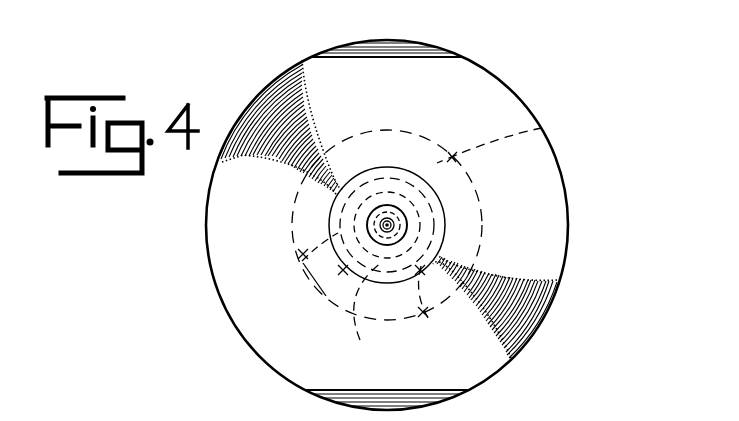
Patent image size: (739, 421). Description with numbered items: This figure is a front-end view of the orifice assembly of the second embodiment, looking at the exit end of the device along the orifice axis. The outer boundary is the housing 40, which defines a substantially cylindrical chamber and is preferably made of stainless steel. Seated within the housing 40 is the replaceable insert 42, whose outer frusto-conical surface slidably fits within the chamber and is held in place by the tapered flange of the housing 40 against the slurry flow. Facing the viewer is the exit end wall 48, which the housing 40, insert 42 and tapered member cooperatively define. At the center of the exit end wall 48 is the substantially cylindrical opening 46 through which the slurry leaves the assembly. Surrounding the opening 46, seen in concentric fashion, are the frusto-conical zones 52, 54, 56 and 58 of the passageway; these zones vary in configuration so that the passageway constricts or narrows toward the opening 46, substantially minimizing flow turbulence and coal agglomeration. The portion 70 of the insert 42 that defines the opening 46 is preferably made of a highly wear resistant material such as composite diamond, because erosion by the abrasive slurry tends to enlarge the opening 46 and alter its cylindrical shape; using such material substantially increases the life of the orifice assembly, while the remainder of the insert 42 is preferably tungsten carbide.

The housing 40 is at (566, 164).
The insert 42 is at (352, 272).
The substantially cylindrical opening 46 is at (388, 222).
The exit end wall 48 is at (545, 250).
The frusto-conical zone 52 is at (591, 134).
The frusto-conical zone 54 is at (458, 345).
The frusto-conical zone 56 is at (302, 261).
The frusto-conical zone 58 is at (389, 364).
The portion of the insert 70 is at (386, 224).